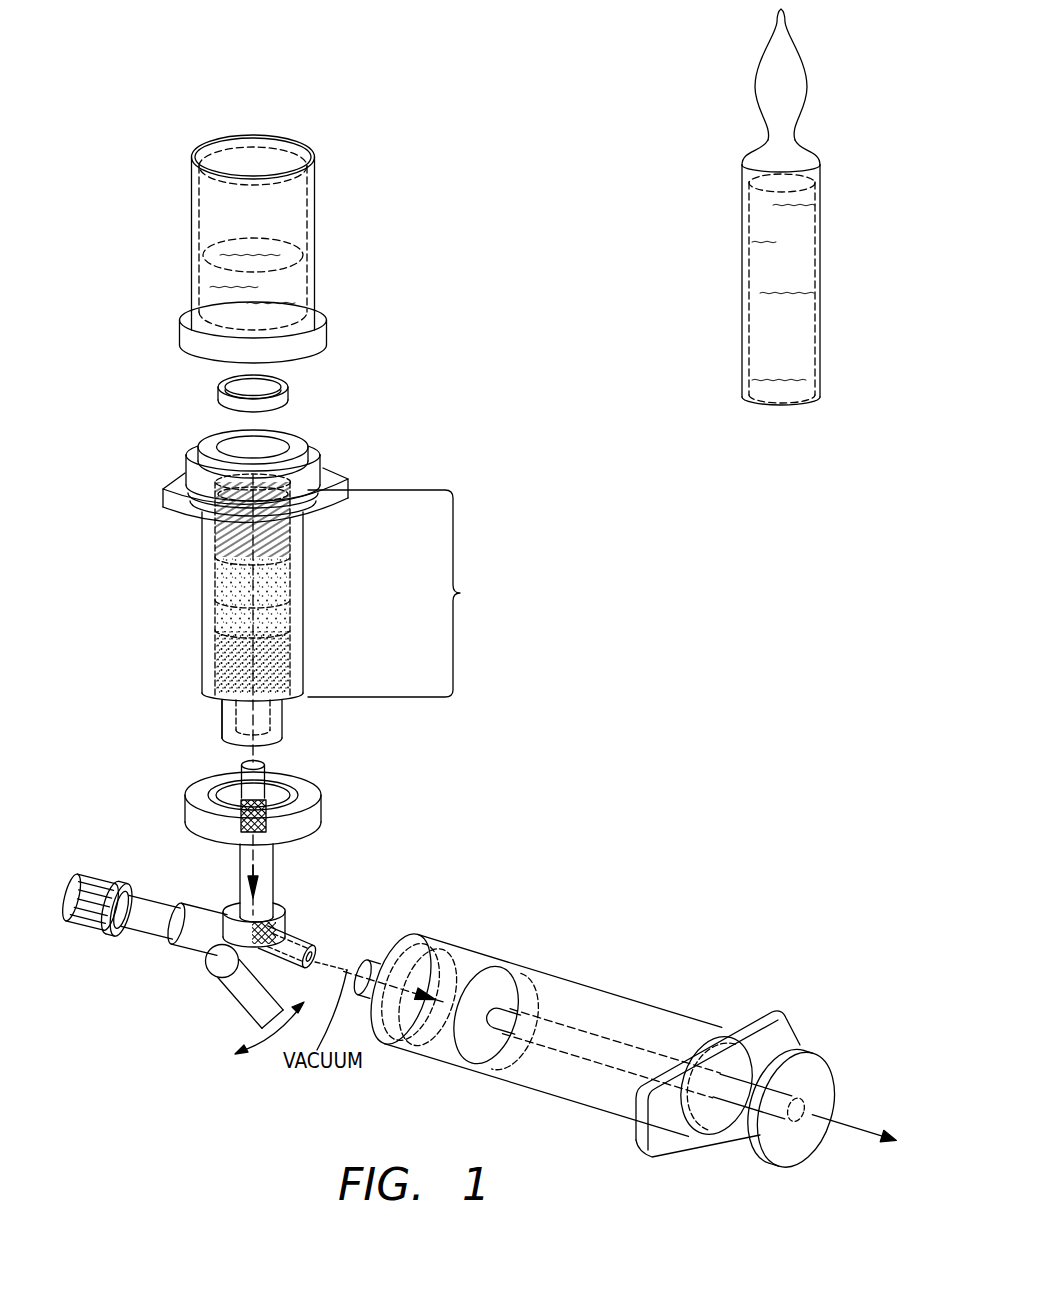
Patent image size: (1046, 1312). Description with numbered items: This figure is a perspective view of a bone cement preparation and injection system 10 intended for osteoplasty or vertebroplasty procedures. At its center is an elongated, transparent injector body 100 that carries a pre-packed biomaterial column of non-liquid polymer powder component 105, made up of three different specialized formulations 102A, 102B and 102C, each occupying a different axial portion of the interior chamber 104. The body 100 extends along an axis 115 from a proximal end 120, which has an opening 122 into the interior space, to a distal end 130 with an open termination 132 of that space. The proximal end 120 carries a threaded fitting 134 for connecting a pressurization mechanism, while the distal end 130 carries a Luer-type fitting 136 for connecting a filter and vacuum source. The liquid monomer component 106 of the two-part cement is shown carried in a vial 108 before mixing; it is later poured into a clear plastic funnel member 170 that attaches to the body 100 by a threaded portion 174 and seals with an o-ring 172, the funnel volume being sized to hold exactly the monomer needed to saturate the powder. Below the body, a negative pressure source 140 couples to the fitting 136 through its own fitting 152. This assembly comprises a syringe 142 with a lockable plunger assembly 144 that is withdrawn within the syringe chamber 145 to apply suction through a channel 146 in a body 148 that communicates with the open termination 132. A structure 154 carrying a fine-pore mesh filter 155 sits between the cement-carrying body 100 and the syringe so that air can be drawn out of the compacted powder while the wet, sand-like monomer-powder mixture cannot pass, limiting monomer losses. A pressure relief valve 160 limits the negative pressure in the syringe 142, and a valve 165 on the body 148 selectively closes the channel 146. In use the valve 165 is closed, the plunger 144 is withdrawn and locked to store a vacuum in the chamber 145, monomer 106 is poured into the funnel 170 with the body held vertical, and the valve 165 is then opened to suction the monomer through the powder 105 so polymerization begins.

The system 10 is at (470, 35).
The injector body 100 is at (368, 441).
The biomaterial formulation 102A is at (290, 660).
The biomaterial formulation 102B is at (290, 590).
The biomaterial formulation 102C is at (300, 530).
The interior chamber 104 is at (215, 605).
The non-liquid polymer powder component 105 is at (357, 589).
The liquid monomer component 106 is at (295, 283).
The vial 108 is at (770, 88).
The axis 115 is at (250, 580).
The proximal end 120 is at (187, 490).
The opening 122 is at (250, 455).
The distal end 130 is at (280, 712).
The open termination 132 is at (198, 210).
The threaded fitting 134 is at (195, 468).
The fitting 136 is at (232, 730).
The negative pressure source 140 is at (665, 938).
The syringe 142 is at (660, 1005).
The lockable plunger assembly 144 is at (500, 985).
The syringe chamber 145 is at (420, 945).
The channel 146 is at (278, 940).
The body 148 is at (270, 908).
The fitting 152 is at (243, 777).
The structure 154 is at (310, 818).
The filter 155 is at (243, 812).
The pressure relief valve 160 is at (203, 968).
The valve 165 is at (218, 968).
The funnel member 170 is at (338, 172).
The o-ring 172 is at (280, 402).
The threaded portion 174 is at (190, 338).